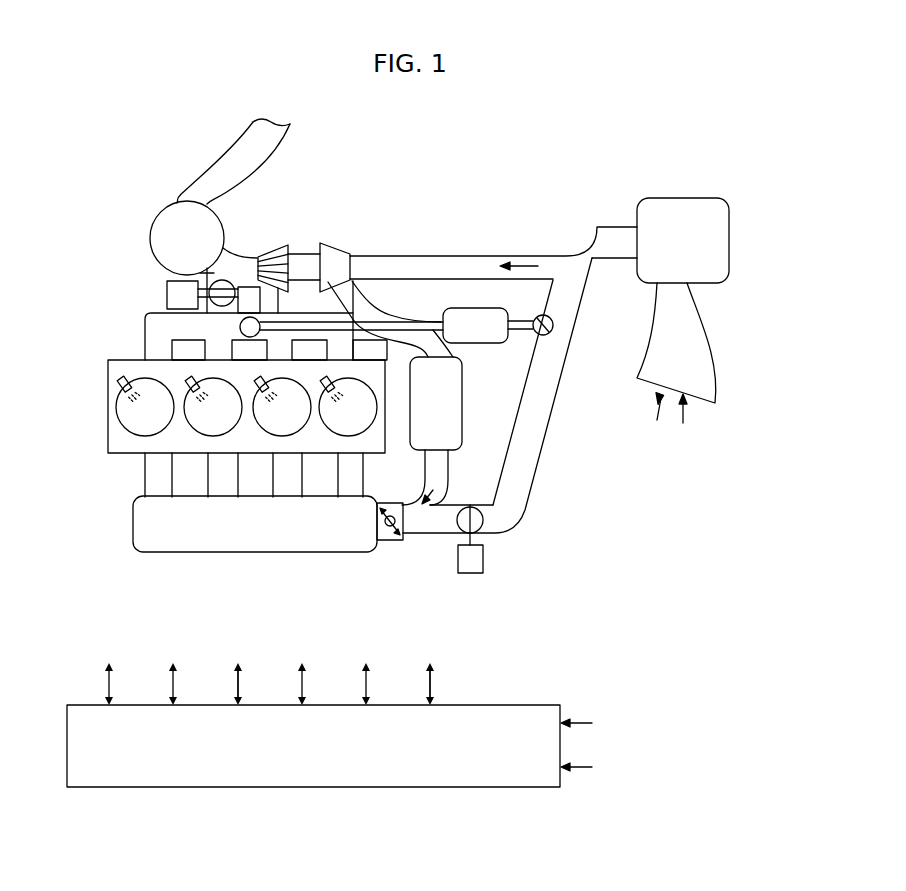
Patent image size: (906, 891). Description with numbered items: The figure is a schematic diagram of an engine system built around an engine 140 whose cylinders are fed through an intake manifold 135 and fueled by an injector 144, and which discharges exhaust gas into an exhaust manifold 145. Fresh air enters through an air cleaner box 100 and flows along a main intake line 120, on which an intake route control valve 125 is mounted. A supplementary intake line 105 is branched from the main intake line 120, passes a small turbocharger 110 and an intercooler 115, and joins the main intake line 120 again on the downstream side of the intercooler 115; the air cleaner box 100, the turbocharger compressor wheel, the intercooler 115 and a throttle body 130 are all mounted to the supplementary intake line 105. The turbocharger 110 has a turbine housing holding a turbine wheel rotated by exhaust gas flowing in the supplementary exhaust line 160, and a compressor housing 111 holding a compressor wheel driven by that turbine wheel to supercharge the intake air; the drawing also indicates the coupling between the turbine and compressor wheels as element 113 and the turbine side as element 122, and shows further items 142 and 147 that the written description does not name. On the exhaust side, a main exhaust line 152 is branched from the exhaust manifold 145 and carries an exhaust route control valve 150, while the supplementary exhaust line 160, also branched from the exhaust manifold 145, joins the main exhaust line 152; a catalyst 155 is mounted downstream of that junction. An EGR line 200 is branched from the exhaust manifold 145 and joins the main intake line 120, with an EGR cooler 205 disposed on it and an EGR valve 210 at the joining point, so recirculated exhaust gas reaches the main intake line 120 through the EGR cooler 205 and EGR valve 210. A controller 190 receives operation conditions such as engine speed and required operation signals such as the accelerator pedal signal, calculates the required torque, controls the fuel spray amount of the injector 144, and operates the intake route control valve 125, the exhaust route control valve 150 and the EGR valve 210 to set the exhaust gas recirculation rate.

The air cleaner box 100 is at (677, 205).
The supplementary intake line 105 is at (438, 264).
The small turbocharger 110 is at (365, 183).
The compressor housing 111 is at (338, 255).
The shaft 113 is at (306, 256).
The intercooler 115 is at (453, 400).
The main intake line 120 is at (540, 458).
The turbine 122 is at (276, 254).
The intake route control valve 125 is at (470, 574).
The throttle body 130 is at (389, 541).
The intake manifold 135 is at (257, 553).
The engine 140 is at (207, 406).
The sensor 142 is at (430, 667).
The injector 144 is at (188, 387).
The exhaust manifold 145 is at (145, 334).
The sensor 147 is at (238, 667).
The exhaust route control valve 150 is at (173, 297).
The main exhaust line 152 is at (186, 273).
The catalyst 155 is at (162, 220).
The supplementary exhaust line 160 is at (272, 302).
The controller 190 is at (302, 788).
The EGR line 200 is at (390, 326).
The EGR cooler 205 is at (480, 320).
The EGR valve 210 is at (553, 329).